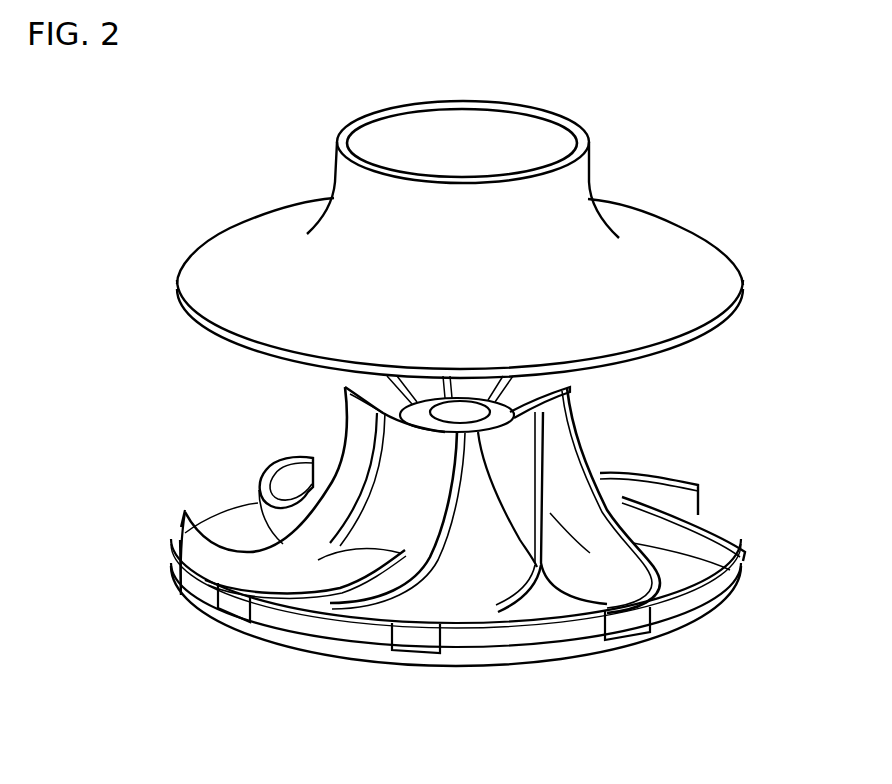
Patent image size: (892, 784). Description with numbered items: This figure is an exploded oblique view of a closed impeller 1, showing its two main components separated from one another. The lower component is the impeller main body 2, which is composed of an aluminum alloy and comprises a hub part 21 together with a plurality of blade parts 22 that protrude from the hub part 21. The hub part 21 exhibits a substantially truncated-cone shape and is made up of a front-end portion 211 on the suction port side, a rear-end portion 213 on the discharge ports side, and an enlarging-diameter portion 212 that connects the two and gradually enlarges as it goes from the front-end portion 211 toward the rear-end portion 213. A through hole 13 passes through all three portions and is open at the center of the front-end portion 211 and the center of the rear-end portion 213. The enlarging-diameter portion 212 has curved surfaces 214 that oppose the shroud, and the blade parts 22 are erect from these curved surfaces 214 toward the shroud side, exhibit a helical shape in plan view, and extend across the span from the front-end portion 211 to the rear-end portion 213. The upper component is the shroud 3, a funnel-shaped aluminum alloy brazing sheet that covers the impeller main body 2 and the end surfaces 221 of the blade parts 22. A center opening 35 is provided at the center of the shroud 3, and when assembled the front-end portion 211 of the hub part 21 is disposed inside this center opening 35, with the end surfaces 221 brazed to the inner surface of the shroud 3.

The closed impeller 1 is at (737, 115).
The impeller main body 2 is at (742, 563).
The shroud 3 is at (701, 271).
The center opening 35 is at (509, 128).
The through hole 13 is at (468, 413).
The hub part 21 is at (690, 597).
The blade parts 22 is at (204, 557).
The front-end portion 211 is at (497, 447).
The enlarging-diameter portion 212 is at (502, 568).
The rear-end portion 213 is at (355, 656).
The curved surfaces 214 is at (405, 546).
The end surfaces 221 is at (540, 568).